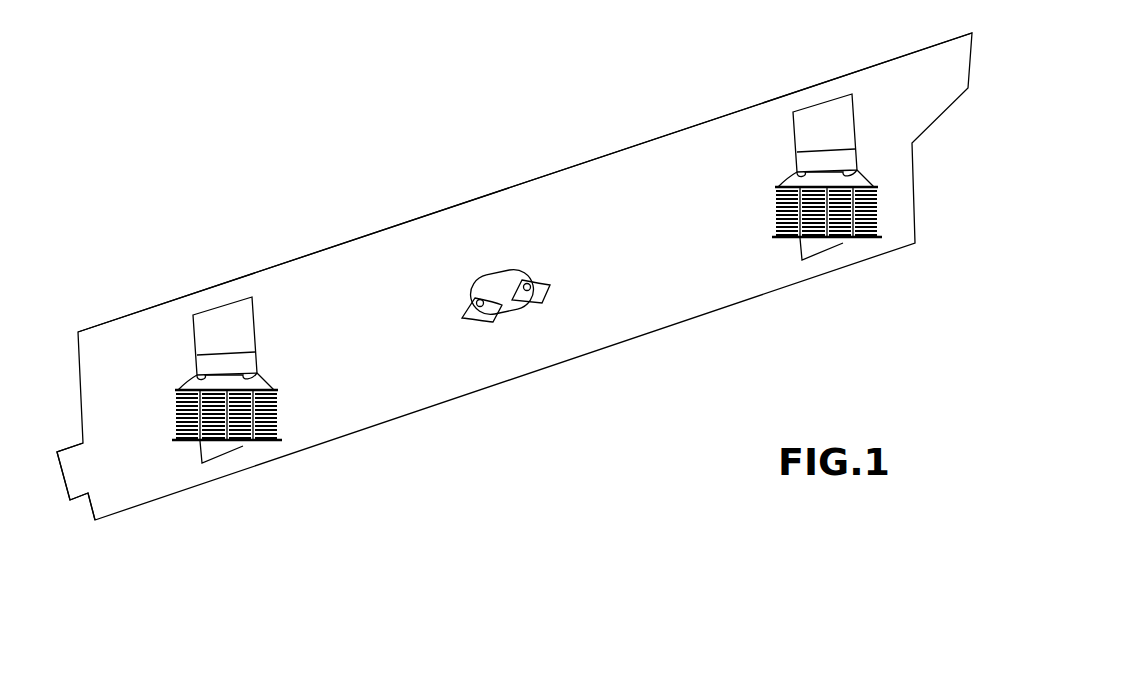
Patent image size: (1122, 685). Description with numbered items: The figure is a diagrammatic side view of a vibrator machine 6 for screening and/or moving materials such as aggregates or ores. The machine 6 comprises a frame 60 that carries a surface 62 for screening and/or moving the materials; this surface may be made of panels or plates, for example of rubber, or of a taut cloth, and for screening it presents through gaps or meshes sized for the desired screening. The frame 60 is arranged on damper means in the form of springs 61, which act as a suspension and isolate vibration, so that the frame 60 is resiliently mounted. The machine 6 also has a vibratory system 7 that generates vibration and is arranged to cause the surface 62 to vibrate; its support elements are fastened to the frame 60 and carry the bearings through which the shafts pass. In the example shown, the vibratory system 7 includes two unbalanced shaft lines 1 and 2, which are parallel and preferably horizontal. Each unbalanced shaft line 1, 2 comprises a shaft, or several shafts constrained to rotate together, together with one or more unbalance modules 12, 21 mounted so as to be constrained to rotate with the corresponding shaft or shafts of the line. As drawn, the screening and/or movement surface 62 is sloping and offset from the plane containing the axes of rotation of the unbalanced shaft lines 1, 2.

The vibrator machine 6 is at (333, 179).
The frame 60 is at (122, 507).
The springs 61 is at (240, 440).
The surface for screening and/or moving materials 62 is at (700, 127).
The vibratory system 7 is at (566, 270).
The unbalanced shaft line 1 is at (478, 299).
The unbalanced shaft line 2 is at (527, 283).
The unbalance module 12 is at (488, 318).
The unbalance module 21 is at (538, 303).